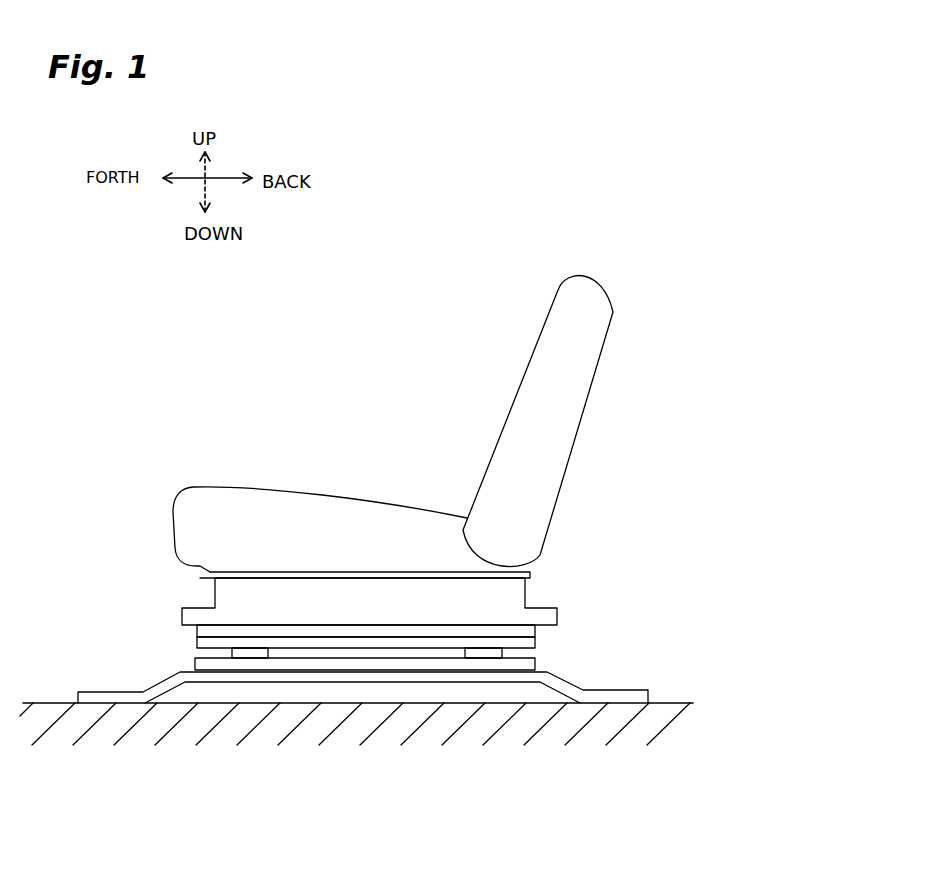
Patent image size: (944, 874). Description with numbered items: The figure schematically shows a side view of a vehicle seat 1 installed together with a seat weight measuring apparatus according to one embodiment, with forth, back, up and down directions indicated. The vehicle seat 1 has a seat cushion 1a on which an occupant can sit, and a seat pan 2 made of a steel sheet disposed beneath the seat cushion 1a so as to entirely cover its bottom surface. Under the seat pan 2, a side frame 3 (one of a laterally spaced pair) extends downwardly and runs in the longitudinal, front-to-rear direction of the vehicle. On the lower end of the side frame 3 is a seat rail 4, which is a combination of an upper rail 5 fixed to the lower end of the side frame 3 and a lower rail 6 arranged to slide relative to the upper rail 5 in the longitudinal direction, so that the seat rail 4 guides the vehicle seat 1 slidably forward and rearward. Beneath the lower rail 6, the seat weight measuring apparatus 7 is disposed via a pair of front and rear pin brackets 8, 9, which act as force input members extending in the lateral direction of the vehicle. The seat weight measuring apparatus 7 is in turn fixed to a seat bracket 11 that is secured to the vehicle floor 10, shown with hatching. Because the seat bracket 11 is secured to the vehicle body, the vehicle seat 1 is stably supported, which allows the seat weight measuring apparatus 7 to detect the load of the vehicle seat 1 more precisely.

The vehicle seat 1 is at (438, 492).
The seat cushion 1a is at (240, 510).
The seat pan 2 is at (368, 575).
The side frame 3 is at (498, 594).
The seat rail 4 is at (472, 627).
The upper rail 5 is at (528, 632).
The lower rail 6 is at (528, 641).
The seat weight measuring apparatus 7 is at (325, 670).
The front pin bracket 8 is at (247, 657).
The rear pin bracket 9 is at (487, 657).
The vehicle floor 10 is at (673, 723).
The seat bracket 11 is at (160, 683).